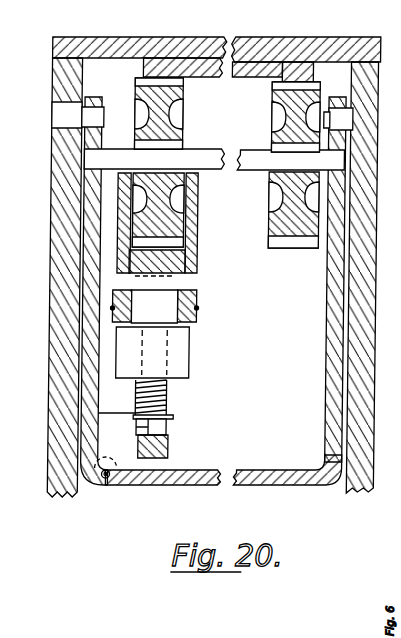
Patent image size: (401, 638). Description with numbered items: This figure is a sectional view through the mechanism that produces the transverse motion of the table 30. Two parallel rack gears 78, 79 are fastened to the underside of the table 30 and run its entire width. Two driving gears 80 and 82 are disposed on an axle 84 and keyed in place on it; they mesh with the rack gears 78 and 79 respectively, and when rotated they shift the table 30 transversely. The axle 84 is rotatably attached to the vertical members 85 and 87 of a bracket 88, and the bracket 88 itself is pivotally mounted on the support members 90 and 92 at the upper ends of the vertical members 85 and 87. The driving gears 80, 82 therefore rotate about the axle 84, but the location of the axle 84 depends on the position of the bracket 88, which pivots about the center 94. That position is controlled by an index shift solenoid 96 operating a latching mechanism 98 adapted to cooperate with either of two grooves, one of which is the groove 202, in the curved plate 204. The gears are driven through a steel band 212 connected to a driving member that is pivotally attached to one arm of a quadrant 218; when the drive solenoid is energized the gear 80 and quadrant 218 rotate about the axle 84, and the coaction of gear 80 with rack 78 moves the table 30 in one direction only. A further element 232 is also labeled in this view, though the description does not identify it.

The table 30 is at (274, 40).
The rack gear 78 is at (157, 67).
The rack gear 79 is at (300, 70).
The driving gear 80 is at (163, 122).
The driving gear 82 is at (270, 100).
The axle 84 is at (257, 141).
The vertical member 85 is at (88, 228).
The vertical member 87 is at (327, 289).
The bracket 88 is at (196, 488).
The support member 90 is at (52, 192).
The support member 92 is at (357, 345).
The center 94 is at (58, 118).
The index shift solenoid 96 is at (183, 355).
The latching mechanism 98 is at (177, 397).
The groove 202 is at (172, 418).
The curved plate 204 is at (170, 452).
The steel band 212 is at (190, 280).
The quadrant 218 is at (188, 216).
The collar 232 is at (198, 303).